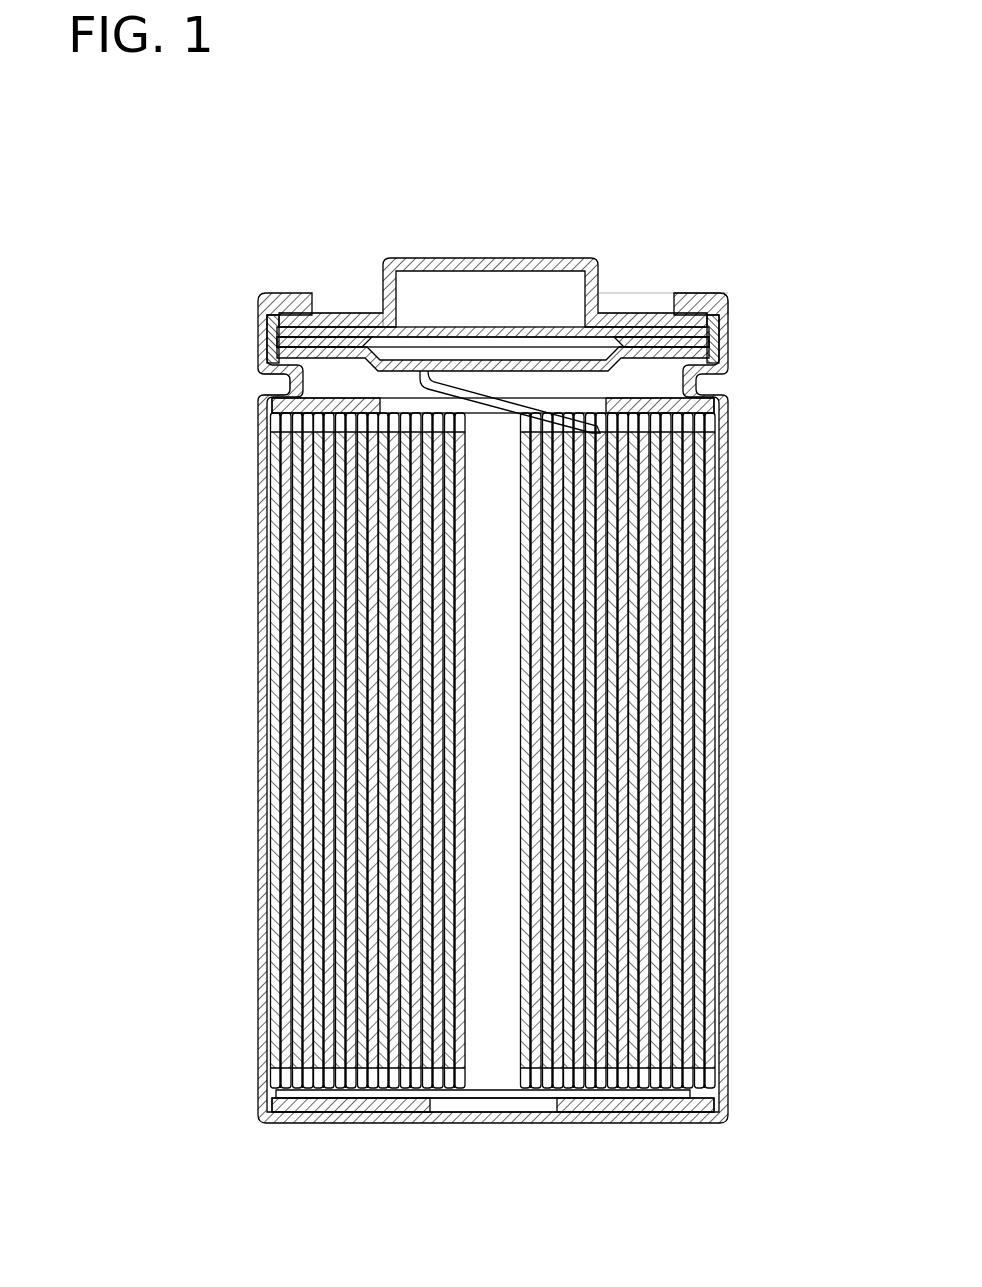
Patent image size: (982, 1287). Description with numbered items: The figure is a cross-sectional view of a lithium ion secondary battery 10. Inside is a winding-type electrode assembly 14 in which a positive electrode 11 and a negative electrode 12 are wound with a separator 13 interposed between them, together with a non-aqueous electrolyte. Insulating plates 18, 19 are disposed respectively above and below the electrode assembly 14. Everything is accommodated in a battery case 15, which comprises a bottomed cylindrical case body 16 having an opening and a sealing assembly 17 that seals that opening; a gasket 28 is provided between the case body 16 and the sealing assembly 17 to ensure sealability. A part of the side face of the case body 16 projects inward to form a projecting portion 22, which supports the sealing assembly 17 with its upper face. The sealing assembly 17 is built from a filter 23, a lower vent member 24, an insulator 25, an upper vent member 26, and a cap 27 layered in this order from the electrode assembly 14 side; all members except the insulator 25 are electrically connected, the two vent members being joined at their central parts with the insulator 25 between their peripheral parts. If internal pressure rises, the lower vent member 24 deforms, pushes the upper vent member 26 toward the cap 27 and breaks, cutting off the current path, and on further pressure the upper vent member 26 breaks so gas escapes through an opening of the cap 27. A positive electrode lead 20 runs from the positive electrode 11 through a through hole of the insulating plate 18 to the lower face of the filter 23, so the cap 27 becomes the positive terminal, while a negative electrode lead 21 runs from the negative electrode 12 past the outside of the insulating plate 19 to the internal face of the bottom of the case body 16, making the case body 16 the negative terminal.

The lithium ion secondary battery 10 is at (517, 621).
The positive electrode 11 is at (680, 815).
The negative electrode 12 is at (700, 848).
The separator 13 is at (700, 875).
The electrode assembly 14 is at (562, 750).
The battery case 15 is at (708, 206).
The case body 16 is at (686, 298).
The sealing assembly 17 is at (625, 316).
The insulating plate 18 is at (728, 405).
The insulating plate 19 is at (730, 1110).
The positive electrode lead 20 is at (424, 375).
The negative electrode lead 21 is at (262, 1100).
The projecting portion 22 is at (262, 385).
The filter 23 is at (492, 362).
The lower vent member 24 is at (397, 335).
The insulator 25 is at (340, 325).
The upper vent member 26 is at (410, 340).
The cap 27 is at (560, 262).
The gasket 28 is at (728, 312).